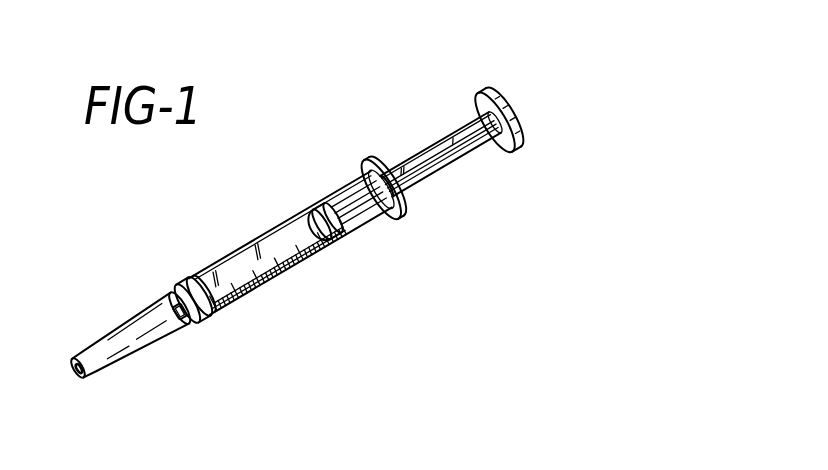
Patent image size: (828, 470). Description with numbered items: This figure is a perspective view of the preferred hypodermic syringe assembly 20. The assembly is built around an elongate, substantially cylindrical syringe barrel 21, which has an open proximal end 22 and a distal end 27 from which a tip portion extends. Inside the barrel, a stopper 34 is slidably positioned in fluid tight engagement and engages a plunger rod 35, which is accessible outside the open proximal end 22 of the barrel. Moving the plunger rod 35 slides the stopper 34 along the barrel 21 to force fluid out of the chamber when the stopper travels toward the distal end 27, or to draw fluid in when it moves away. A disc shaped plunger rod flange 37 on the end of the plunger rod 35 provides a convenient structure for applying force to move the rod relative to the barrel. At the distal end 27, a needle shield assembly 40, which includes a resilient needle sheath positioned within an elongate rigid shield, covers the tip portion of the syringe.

The hypodermic syringe assembly 20 is at (585, 66).
The syringe barrel 21 is at (266, 230).
The open proximal end 22 is at (400, 206).
The distal end 27 is at (215, 313).
The stopper 34 is at (322, 203).
The plunger rod 35 is at (433, 140).
The plunger rod flange 37 is at (516, 120).
The needle shield assembly 40 is at (148, 316).